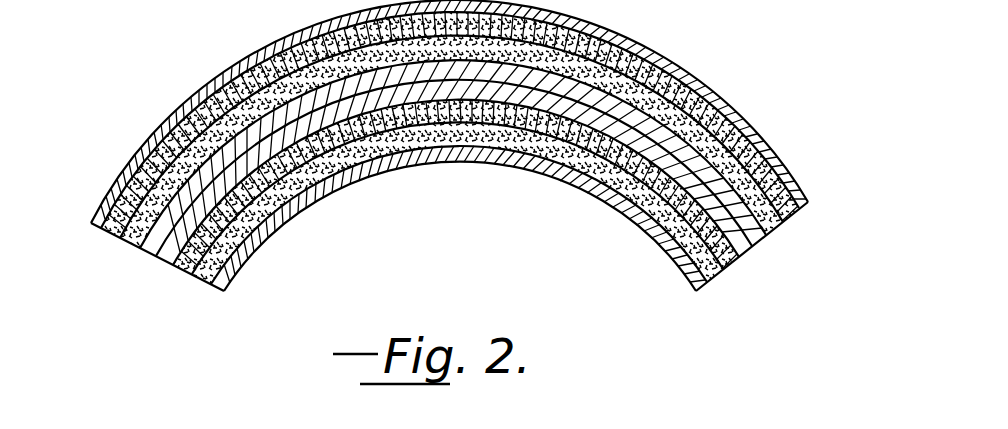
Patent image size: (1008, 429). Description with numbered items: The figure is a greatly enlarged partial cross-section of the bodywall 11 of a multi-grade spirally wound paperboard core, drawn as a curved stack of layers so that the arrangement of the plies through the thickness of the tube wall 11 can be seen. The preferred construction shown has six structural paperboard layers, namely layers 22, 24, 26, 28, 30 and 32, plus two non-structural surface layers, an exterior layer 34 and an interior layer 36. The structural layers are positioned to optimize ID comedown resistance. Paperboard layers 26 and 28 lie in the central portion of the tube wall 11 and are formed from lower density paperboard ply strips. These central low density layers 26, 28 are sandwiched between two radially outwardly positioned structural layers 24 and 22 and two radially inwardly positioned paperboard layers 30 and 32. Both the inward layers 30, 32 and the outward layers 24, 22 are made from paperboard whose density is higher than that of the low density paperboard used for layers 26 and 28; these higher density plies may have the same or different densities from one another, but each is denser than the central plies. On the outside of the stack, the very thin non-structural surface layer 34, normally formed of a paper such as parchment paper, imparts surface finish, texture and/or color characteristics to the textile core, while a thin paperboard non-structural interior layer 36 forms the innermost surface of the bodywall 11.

The bodywall 11 is at (460, 171).
The radially outwardly positioned structural layer 22 is at (117, 229).
The radially outwardly positioned structural layer 24 is at (777, 235).
The central lower density paperboard layer 26 is at (156, 237).
The central lower density paperboard layer 28 is at (743, 260).
The radially inwardly positioned paperboard layer 30 is at (185, 277).
The radially inwardly positioned paperboard layer 32 is at (690, 280).
The non-structural exterior surface layer 34 is at (745, 122).
The non-structural interior layer 36 is at (682, 284).